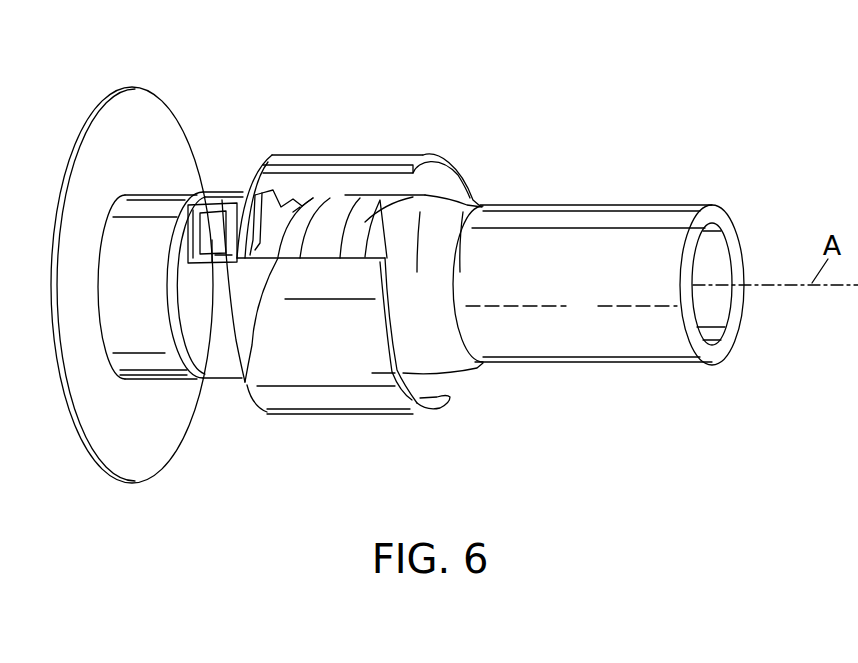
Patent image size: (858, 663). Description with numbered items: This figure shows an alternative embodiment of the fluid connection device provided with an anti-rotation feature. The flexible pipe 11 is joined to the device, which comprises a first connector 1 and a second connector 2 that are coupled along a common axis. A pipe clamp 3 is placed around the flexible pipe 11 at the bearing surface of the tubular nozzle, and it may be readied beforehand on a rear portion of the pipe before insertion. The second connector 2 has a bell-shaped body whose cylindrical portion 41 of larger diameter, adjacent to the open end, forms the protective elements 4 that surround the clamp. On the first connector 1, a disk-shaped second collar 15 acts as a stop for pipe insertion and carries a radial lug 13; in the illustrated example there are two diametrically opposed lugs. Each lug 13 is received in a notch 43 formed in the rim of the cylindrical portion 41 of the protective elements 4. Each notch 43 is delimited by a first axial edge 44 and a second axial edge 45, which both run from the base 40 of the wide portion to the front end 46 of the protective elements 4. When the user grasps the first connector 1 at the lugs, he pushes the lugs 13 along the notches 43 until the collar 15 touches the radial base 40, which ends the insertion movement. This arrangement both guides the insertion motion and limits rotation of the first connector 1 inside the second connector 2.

The first connector 1 is at (541, 160).
The second connector 2 is at (198, 113).
The pipe clamp 3 is at (425, 207).
The protective elements 4 is at (383, 140).
The flexible pipe 11 is at (580, 198).
The radial lug 13 is at (260, 190).
The second collar 15 is at (292, 210).
The base 40 is at (243, 188).
The cylindrical portion 41 is at (337, 400).
The notch 43 is at (441, 388).
The first axial edge 44 is at (403, 155).
The second axial edge 45 is at (245, 382).
The front end 46 is at (424, 410).